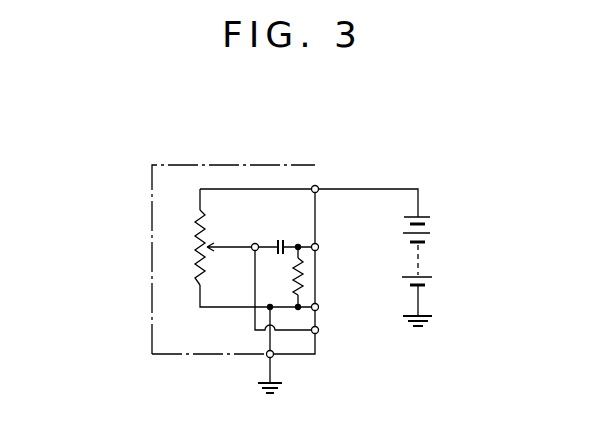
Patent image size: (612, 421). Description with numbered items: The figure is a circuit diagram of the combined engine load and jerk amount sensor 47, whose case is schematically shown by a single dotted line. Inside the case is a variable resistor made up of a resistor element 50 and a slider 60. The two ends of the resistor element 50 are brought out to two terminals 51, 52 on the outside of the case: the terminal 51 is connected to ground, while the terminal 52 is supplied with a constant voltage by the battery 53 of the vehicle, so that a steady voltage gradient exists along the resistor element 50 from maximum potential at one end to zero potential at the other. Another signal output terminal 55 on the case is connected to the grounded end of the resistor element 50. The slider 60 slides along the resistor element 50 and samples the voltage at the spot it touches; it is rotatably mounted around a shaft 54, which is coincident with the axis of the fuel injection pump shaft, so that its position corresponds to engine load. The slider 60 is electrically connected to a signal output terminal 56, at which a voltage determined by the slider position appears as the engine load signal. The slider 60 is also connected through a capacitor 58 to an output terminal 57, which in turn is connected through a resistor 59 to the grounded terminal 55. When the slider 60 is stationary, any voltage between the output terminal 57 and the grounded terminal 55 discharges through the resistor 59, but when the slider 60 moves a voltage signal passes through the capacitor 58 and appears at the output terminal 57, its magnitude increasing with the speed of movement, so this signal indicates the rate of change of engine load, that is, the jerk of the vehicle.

The engine load and jerk amount sensor 47 is at (152, 200).
The resistor element 50 is at (198, 267).
The terminal 51 is at (275, 358).
The terminal 52 is at (319, 183).
The battery 53 is at (419, 255).
The shaft 54 is at (252, 244).
The signal output terminal 55 is at (319, 307).
The signal output terminal 56 is at (319, 333).
The output terminal 57 is at (319, 244).
The capacitor 58 is at (280, 240).
The resistor 59 is at (308, 266).
The slider 60 is at (234, 249).